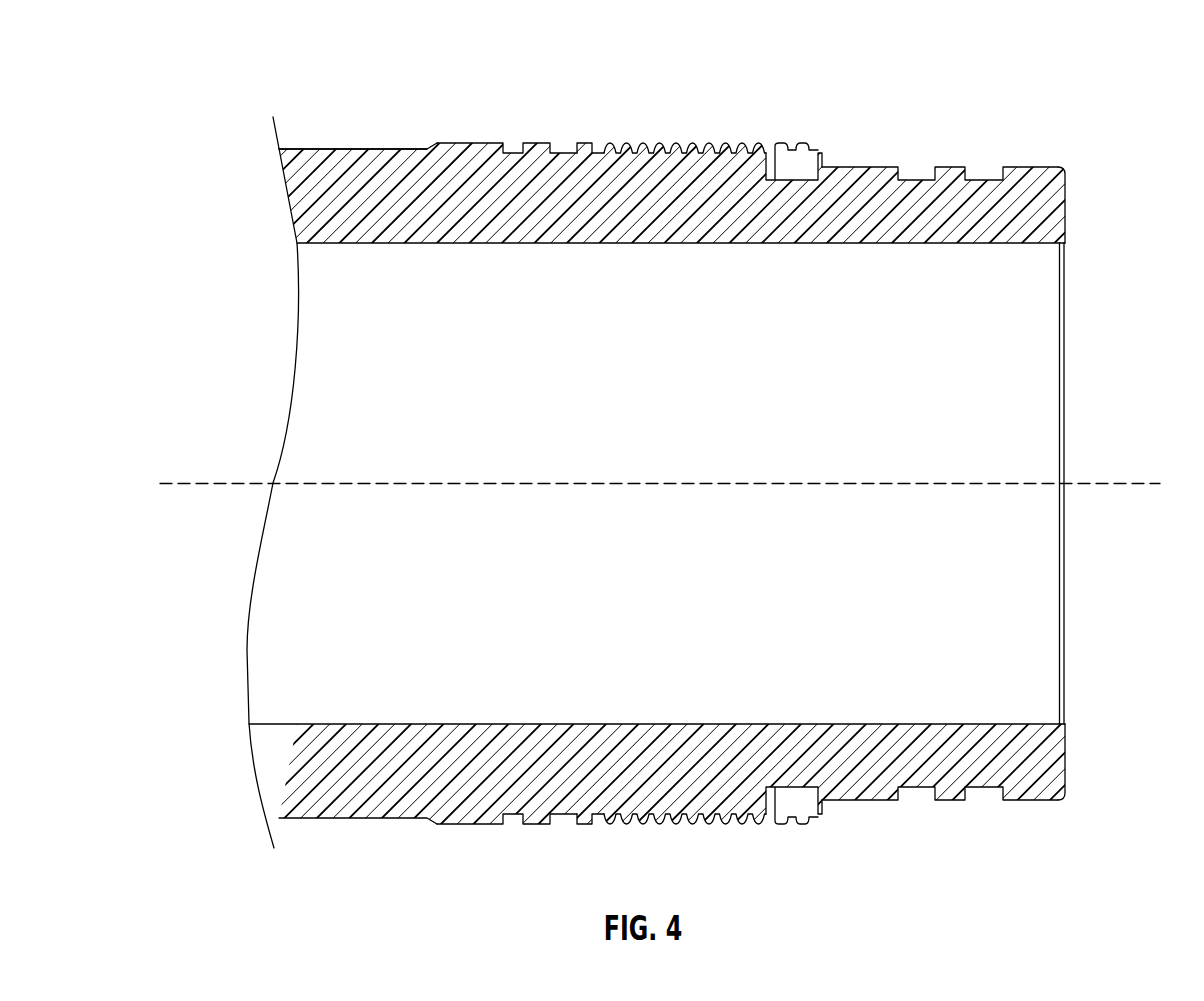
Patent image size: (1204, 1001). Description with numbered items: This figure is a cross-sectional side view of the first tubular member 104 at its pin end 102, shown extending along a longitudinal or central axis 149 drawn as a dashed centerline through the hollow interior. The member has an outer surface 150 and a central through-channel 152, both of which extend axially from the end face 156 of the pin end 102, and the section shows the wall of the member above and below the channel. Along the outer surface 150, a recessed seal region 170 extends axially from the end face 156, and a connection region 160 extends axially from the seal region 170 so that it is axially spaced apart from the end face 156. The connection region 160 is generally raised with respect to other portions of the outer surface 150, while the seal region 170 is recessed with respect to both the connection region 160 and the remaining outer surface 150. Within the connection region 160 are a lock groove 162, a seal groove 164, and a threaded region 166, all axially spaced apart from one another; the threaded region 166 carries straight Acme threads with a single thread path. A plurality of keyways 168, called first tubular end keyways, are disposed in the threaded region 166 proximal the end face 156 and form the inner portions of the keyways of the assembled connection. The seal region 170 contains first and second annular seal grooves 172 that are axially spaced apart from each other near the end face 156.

The pin end 102 is at (670, 467).
The first tubular member 104 is at (328, 162).
The central axis 149 is at (484, 483).
The outer surface 150 is at (358, 143).
The central through-channel 152 is at (1019, 423).
The end face 156 is at (1073, 296).
The connection region 160 is at (655, 433).
The lock groove 162 is at (516, 143).
The seal groove 164 is at (562, 143).
The threaded region 166 is at (643, 143).
The keyways 168 is at (825, 468).
The seal region 170 is at (943, 409).
The annular seal grooves 172 is at (912, 178).